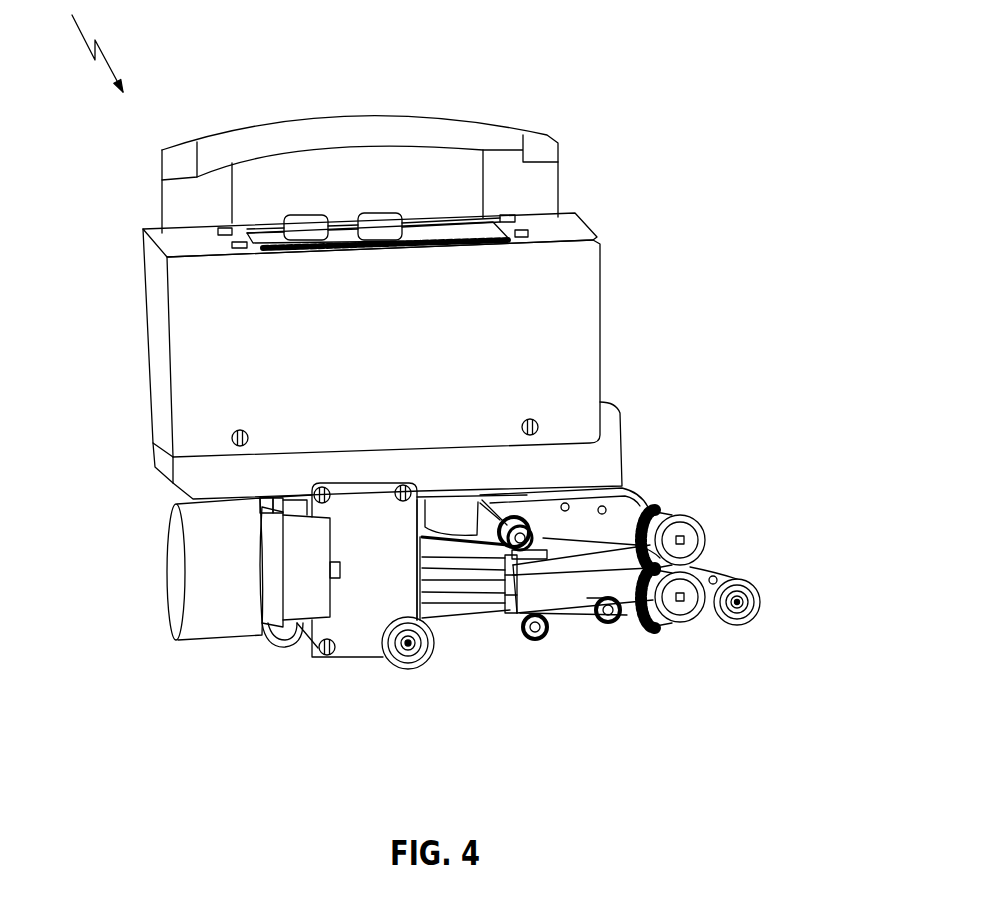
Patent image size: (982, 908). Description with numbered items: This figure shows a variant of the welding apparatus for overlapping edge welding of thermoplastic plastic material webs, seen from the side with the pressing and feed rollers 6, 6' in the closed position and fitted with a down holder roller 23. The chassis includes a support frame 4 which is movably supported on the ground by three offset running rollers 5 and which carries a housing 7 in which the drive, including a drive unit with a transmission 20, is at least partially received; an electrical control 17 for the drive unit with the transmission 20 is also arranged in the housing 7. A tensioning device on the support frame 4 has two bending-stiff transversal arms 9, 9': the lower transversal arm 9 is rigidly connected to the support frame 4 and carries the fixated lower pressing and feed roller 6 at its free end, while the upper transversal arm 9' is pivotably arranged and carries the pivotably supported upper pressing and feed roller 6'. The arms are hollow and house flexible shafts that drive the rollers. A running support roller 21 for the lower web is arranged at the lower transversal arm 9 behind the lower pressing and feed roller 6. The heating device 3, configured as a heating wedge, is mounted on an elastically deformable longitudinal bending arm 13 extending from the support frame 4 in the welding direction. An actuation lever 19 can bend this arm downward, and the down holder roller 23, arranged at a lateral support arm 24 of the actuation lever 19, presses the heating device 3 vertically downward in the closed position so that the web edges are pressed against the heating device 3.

The heating device 3 is at (547, 580).
The support frame 4 is at (352, 607).
The running rollers 5 is at (267, 650).
The lower pressing and feed roller 6 is at (682, 658).
The upper pressing and feed roller 6' is at (718, 497).
The housing 7 is at (568, 267).
The lower transversal arm 9 is at (583, 651).
The upper transversal arm 9' is at (626, 469).
The longitudinal bending arm 13 is at (462, 610).
The electrical control 17 is at (432, 237).
The actuation lever 19 is at (493, 490).
The transmission 20 is at (203, 568).
The running support roller 21 is at (613, 627).
The down holder roller 23 is at (538, 514).
The lateral support arm 24 is at (463, 512).